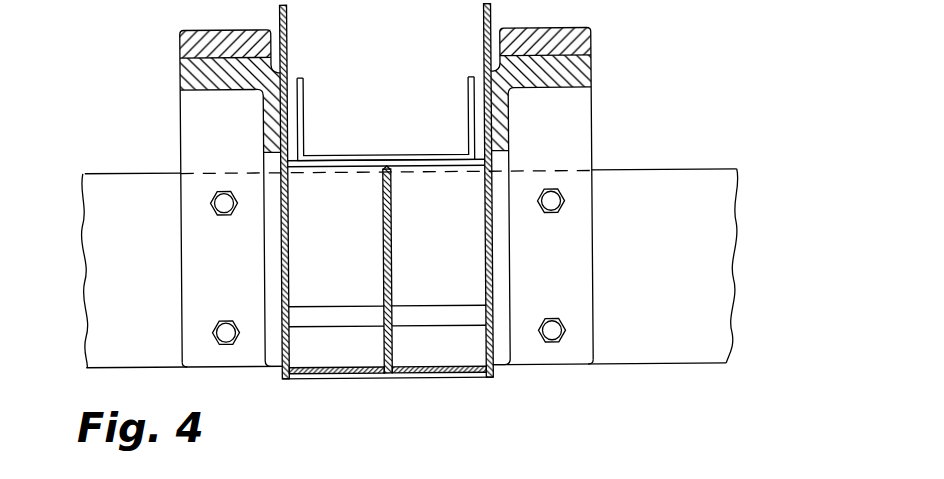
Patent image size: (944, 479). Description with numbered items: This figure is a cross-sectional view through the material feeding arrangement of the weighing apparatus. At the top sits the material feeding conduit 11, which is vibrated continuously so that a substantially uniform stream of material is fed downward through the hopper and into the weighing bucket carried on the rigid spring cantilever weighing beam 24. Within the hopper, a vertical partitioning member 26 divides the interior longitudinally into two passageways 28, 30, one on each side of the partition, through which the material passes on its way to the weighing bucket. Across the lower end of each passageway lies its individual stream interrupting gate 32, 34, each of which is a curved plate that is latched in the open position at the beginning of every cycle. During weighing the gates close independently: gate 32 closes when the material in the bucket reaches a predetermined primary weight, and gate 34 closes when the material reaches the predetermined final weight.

The material feeding conduit 11 is at (306, 110).
The rigid spring cantilever weighing beam 24 is at (503, 174).
The partitioning member 26 is at (392, 253).
The passageway 28 is at (439, 298).
The passageway 30 is at (336, 299).
The stream interrupting gate 32 is at (432, 374).
The stream interrupting gate 34 is at (345, 374).